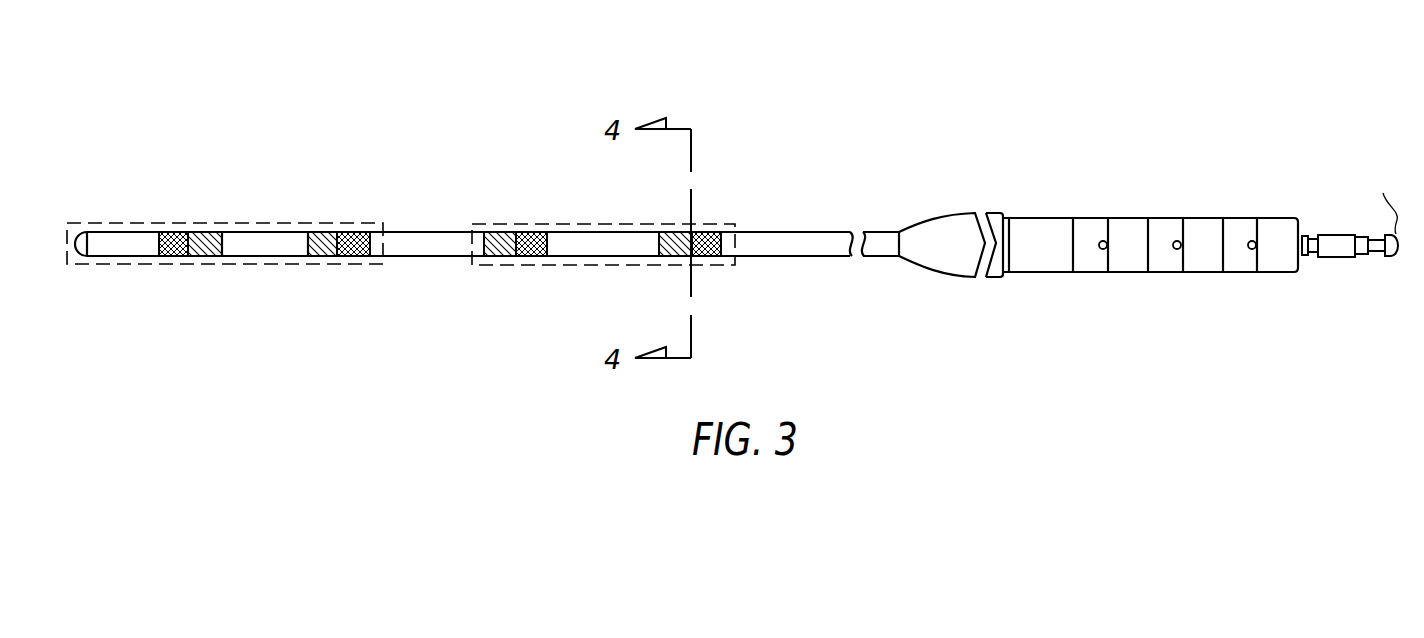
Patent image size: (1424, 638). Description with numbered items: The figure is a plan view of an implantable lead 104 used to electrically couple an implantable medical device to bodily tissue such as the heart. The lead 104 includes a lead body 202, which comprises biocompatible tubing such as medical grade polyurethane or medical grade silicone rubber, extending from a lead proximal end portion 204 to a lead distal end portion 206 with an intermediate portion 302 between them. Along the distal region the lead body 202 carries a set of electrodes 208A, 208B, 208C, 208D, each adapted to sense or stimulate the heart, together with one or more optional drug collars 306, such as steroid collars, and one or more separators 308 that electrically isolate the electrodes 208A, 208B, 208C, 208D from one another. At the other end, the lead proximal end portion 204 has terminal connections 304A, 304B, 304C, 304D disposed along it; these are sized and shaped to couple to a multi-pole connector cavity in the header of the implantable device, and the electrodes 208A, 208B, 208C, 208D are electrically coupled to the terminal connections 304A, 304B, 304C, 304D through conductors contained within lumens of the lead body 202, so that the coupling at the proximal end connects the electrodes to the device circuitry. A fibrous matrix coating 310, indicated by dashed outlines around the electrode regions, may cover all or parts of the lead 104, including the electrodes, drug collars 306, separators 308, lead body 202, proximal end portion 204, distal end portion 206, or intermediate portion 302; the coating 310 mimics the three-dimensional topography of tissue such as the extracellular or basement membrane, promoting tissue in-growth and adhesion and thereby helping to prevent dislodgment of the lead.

The implantable lead 104 is at (1298, 82).
The lead body 202 is at (799, 232).
The lead proximal end portion 204 is at (1128, 218).
The lead distal end portion 206 is at (86, 258).
The electrode 208A is at (710, 232).
The electrode 208B is at (529, 232).
The electrode 208C is at (354, 232).
The electrode 208D is at (177, 232).
The intermediate portion 302 is at (422, 232).
The terminal connection 304A is at (1089, 273).
The terminal connection 304B is at (1163, 273).
The terminal connection 304C is at (1240, 273).
The terminal connection 304D is at (1338, 258).
The drug collar 306 is at (207, 257).
The separator 308 is at (257, 245).
The fibrous matrix coating 310 is at (254, 223).